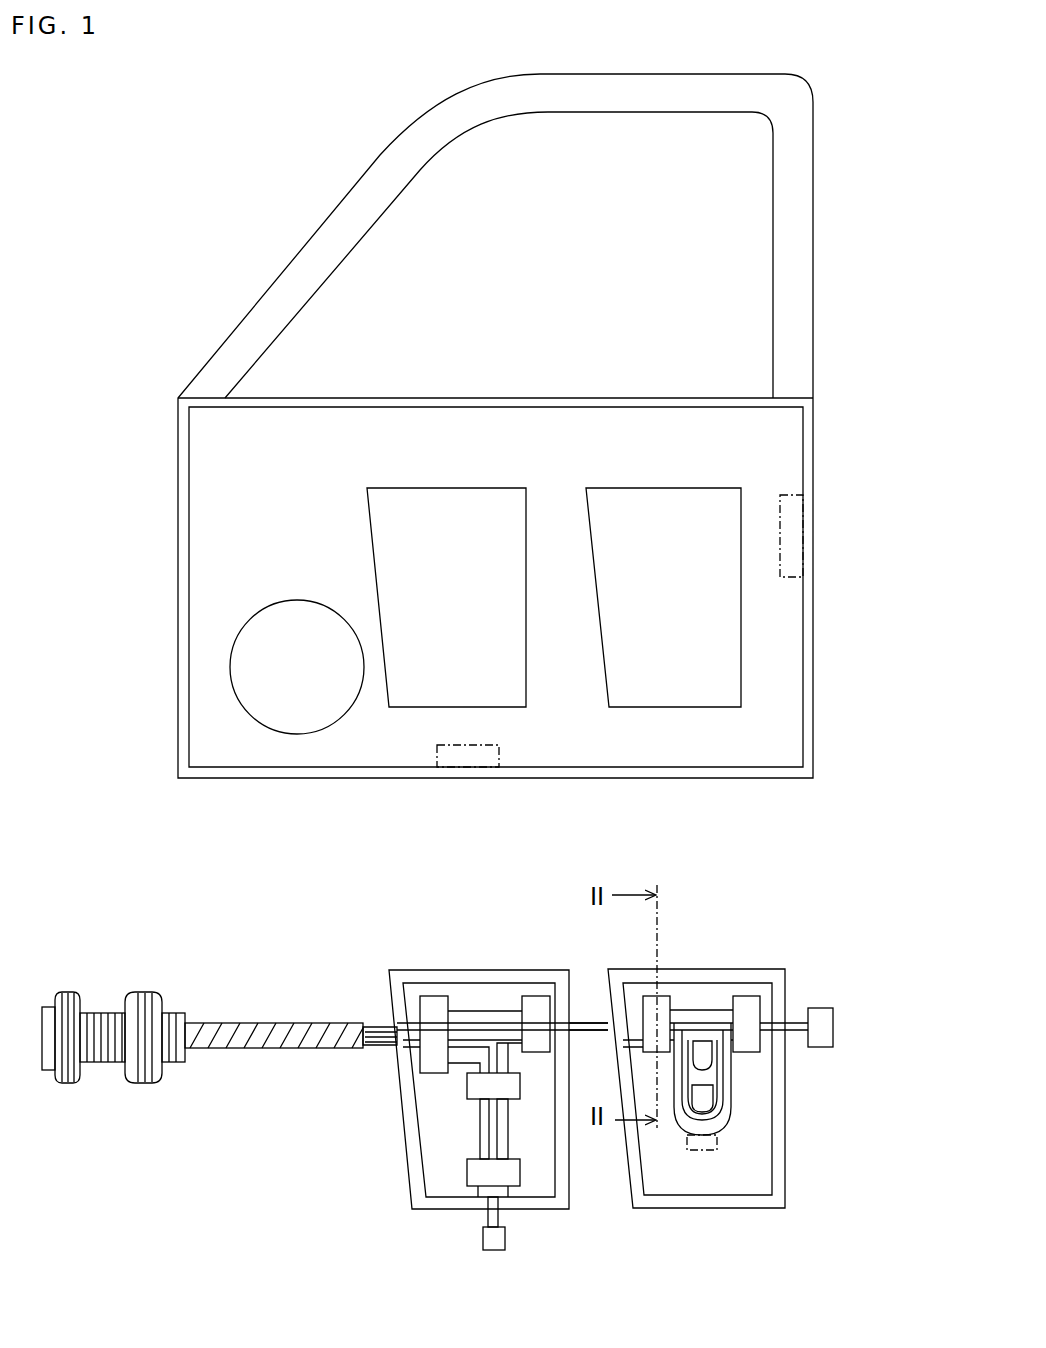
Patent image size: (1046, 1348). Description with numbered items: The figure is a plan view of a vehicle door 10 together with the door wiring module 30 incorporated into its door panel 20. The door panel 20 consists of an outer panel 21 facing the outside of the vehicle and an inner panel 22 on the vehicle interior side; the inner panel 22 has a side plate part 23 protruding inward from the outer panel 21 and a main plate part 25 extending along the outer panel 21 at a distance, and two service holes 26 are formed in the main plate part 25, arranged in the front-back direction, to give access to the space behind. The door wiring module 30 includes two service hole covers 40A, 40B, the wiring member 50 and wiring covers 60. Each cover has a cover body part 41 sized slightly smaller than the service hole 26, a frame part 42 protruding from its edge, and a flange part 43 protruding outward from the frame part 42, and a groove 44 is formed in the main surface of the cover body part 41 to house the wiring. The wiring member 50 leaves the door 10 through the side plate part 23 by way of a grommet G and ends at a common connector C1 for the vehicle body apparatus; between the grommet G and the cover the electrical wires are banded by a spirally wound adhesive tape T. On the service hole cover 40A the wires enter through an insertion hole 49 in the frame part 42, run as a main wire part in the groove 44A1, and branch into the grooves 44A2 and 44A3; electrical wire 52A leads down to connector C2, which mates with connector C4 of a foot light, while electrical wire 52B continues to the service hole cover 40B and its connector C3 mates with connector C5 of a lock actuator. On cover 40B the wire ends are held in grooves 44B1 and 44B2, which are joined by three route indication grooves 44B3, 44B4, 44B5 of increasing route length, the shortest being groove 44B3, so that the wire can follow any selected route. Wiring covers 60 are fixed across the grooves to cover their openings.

The door 10 is at (86, 760).
The door panel 20 is at (160, 760).
The outer panel 21 is at (178, 525).
The inner panel 22 is at (108, 588).
The side plate part 23 is at (189, 600).
The main plate part 25 is at (205, 638).
The service hole 26 is at (436, 492).
The door wiring module 30 is at (126, 935).
The service hole cover 40A is at (458, 970).
The service hole cover 40B is at (733, 969).
The cover body part 41 is at (753, 1152).
The frame part 42 is at (762, 1175).
The flange part 43 is at (770, 1207).
The groove 44 is at (733, 1125).
The groove 44A1 is at (412, 1012).
The groove 44A2 is at (505, 1135).
The groove 44A3 is at (510, 1012).
The groove 44B1 is at (636, 1012).
The groove 44B2 is at (764, 1012).
The groove 44B3 is at (697, 1012).
The groove 44B4 is at (705, 1068).
The groove 44B5 is at (715, 1132).
The insertion hole 49 is at (395, 1050).
The wiring member 50 is at (378, 1016).
The electrical wire 52A is at (500, 1215).
The electrical wire 52B is at (590, 1035).
The wiring cover 60 is at (425, 1074).
The connector C1 is at (45, 1072).
The connector C2 is at (493, 1251).
The connector C3 is at (815, 1008).
The connector C4 is at (498, 768).
The connector C5 is at (785, 578).
The grommet G is at (132, 1085).
The adhesive tape T is at (250, 1030).